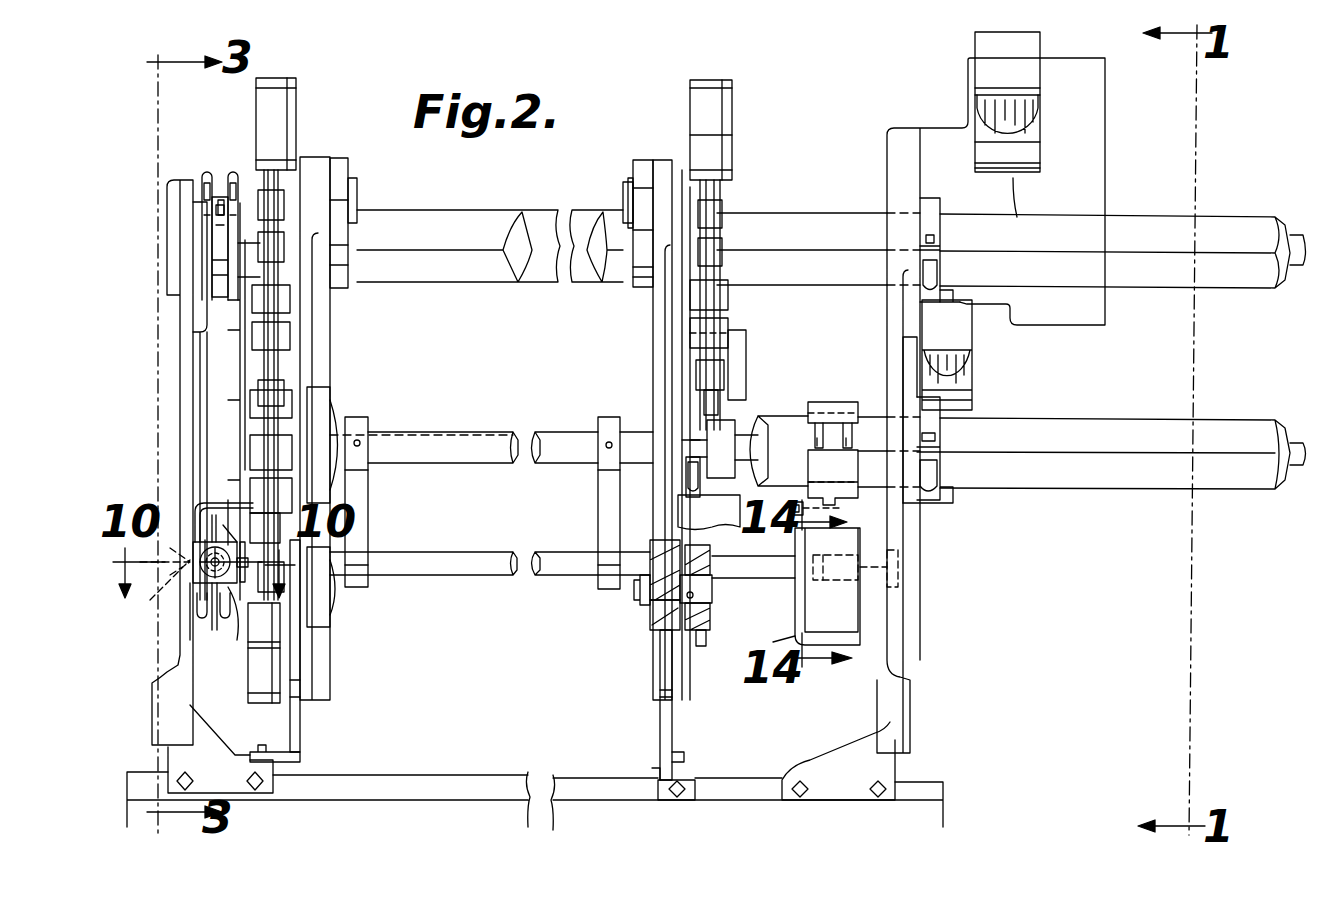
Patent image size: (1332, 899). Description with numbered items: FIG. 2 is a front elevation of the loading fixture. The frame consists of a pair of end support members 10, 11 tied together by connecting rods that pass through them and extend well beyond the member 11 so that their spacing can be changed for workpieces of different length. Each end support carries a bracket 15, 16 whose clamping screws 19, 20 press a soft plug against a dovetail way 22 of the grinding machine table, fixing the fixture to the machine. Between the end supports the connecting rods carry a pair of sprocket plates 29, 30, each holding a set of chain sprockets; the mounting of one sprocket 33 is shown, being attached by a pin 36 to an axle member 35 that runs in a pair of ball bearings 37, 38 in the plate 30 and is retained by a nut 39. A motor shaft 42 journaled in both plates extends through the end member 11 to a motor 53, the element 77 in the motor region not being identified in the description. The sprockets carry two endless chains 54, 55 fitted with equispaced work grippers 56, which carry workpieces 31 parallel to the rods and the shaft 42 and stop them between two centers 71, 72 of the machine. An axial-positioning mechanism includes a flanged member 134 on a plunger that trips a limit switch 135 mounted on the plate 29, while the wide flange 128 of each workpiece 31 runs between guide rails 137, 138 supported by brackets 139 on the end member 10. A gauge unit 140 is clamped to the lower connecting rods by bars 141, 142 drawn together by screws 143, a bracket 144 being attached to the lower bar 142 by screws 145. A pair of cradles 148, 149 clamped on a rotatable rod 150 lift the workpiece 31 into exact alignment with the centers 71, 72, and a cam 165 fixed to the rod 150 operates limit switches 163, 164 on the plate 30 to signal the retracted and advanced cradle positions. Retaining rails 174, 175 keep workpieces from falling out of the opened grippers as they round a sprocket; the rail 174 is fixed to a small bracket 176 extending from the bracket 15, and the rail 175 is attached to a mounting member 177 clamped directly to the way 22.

The end support member 10 is at (178, 352).
The end support member 11 is at (897, 637).
The bracket 15 is at (214, 742).
The bracket 16 is at (845, 745).
The clamping screw 19 is at (795, 785).
The clamping screw 20 is at (885, 790).
The dovetail way 22 is at (945, 787).
The sprocket plate 29 is at (312, 353).
The sprocket plate 30 is at (668, 347).
The workpiece 31 is at (452, 552).
The chain sprocket 33 is at (712, 628).
The axle member 35 is at (712, 598).
The pin 36 is at (700, 570).
The ball bearing 37 is at (650, 622).
The ball bearing 38 is at (690, 640).
The nut 39 is at (640, 611).
The motor shaft 42 is at (543, 210).
The motor 53 is at (1085, 159).
The endless chain 54 is at (292, 385).
The endless chain 55 is at (696, 375).
The work gripper 56 is at (732, 140).
The center 71 is at (165, 580).
The center 72 is at (895, 553).
The piston 77 is at (1035, 108).
The wide flange 128 is at (205, 628).
The flanged member 134 is at (250, 615).
The limit switch 135 is at (215, 520).
The guide rail 137 is at (206, 176).
The guide rail 138 is at (234, 176).
The bracket 139 is at (221, 198).
The gauge unit 140 is at (858, 607).
The bar 141 is at (845, 402).
The bar 142 is at (806, 491).
The screws 143 is at (815, 437).
The bracket 144 is at (765, 641).
The screws 145 is at (835, 511).
The cradle 148 is at (368, 508).
The cradle 149 is at (598, 512).
The rod 150 is at (515, 465).
The limit switch 163 is at (746, 355).
The limit switch 164 is at (670, 535).
The cam 165 is at (738, 456).
The retaining rail 174 is at (302, 675).
The retaining rail 175 is at (660, 675).
The small bracket 176 is at (275, 768).
The mounting member 177 is at (664, 790).